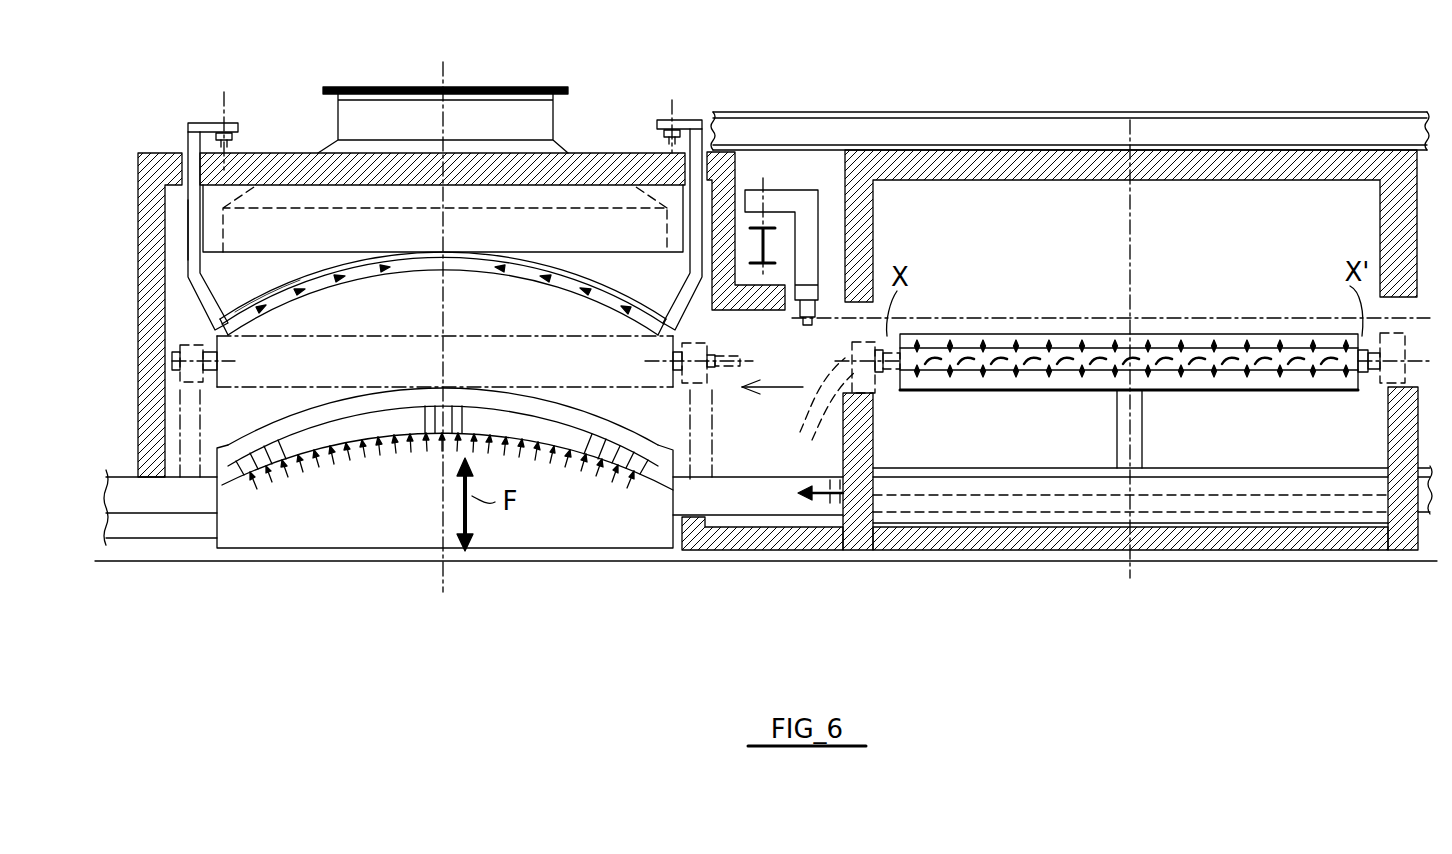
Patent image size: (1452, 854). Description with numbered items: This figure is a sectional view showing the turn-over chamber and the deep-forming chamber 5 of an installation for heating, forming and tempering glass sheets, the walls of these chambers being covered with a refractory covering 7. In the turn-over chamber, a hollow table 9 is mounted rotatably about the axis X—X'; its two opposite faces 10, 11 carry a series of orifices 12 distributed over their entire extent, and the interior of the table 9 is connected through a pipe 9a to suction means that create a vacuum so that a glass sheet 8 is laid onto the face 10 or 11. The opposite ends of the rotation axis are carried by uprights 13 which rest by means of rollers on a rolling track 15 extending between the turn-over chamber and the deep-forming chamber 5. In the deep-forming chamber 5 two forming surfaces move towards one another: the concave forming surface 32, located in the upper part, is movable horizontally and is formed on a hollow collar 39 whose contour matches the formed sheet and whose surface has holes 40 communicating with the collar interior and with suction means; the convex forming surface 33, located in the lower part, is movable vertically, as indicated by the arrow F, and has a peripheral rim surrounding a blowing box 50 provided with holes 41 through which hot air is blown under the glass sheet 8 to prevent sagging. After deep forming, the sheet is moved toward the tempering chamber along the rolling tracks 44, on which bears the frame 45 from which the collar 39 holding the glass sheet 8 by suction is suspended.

The deep-forming chamber 5 is at (664, 198).
The refractory covering 7 is at (158, 316).
The glass sheet 8 is at (1012, 392).
The table 9 is at (630, 396).
The pipe 9a is at (821, 446).
The face 10 is at (1165, 392).
The face 11 is at (1178, 335).
The orifices 12 is at (1022, 335).
The uprights 13 is at (1388, 406).
The rolling track 15 is at (887, 552).
The concave forming surface 32 is at (530, 287).
The convex forming surface 33 is at (533, 398).
The hollow collar 39 is at (319, 286).
The holes 40 is at (405, 273).
The holes 41 is at (367, 428).
The rolling tracks 44 is at (234, 142).
The frame 45 is at (194, 216).
The blowing box 50 is at (520, 435).